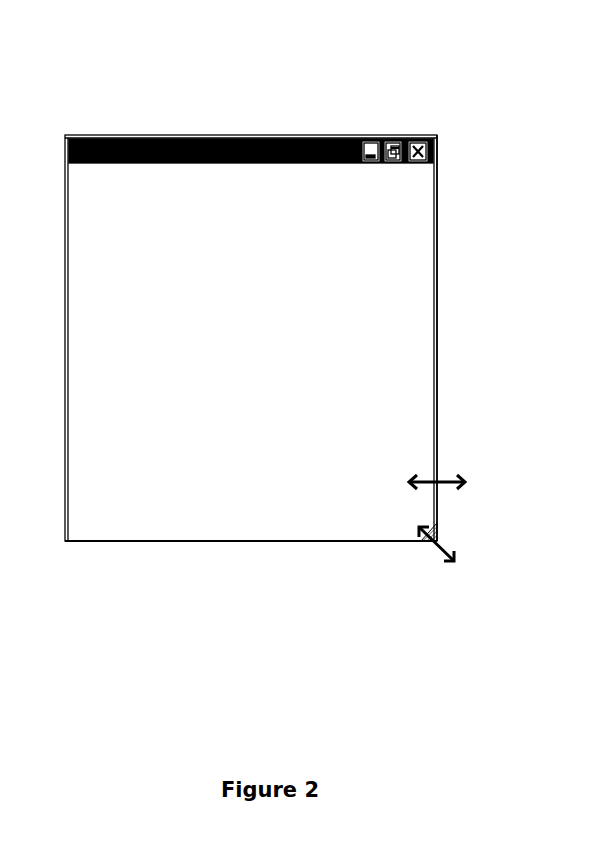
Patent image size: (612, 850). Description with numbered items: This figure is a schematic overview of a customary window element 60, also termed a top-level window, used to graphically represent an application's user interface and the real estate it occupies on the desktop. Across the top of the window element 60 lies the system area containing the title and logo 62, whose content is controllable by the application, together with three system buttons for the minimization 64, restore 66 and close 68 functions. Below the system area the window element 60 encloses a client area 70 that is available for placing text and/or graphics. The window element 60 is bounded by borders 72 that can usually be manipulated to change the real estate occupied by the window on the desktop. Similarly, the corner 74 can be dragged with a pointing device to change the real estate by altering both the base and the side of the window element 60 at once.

The window element 60 is at (153, 82).
The title and logo 62 is at (95, 138).
The minimization button 64 is at (374, 146).
The restore button 66 is at (398, 146).
The close button 68 is at (418, 148).
The client area 70 is at (398, 370).
The borders 72 is at (440, 478).
The corner 74 is at (442, 543).